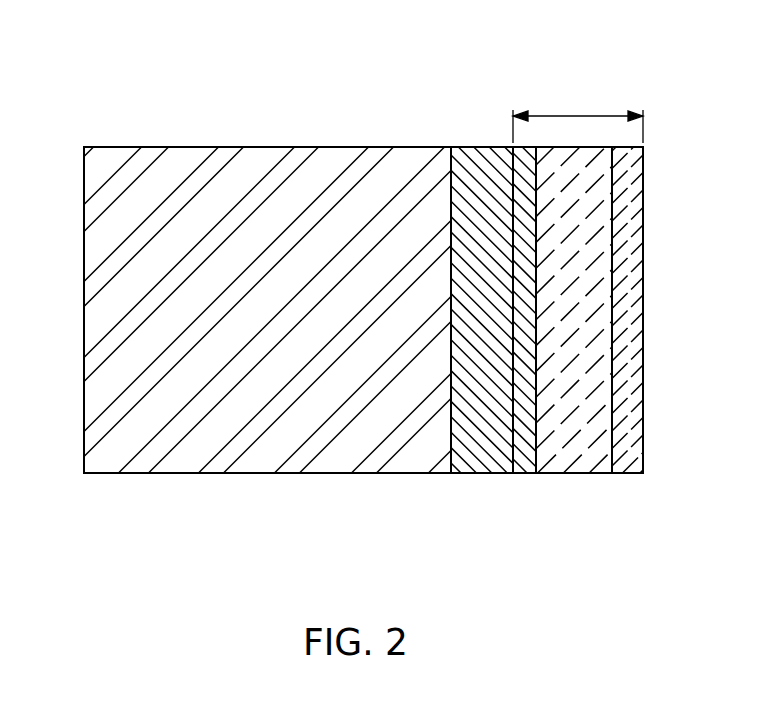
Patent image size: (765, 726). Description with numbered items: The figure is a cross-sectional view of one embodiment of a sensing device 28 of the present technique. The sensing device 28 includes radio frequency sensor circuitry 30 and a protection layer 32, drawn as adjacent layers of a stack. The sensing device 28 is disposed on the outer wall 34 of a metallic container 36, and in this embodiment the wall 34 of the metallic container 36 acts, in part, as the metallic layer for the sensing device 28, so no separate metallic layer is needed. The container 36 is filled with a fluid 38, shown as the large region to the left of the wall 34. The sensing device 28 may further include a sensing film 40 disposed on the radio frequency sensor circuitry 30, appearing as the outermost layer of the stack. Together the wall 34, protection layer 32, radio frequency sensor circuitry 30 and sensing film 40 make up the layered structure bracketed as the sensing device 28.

The sensing device 28 is at (578, 115).
The radio frequency sensor circuitry 30 is at (573, 474).
The protection layer 32 is at (523, 474).
The outer wall 34 is at (482, 474).
The metallic container 36 is at (335, 474).
The fluid 38 is at (234, 160).
The sensing film 40 is at (627, 474).